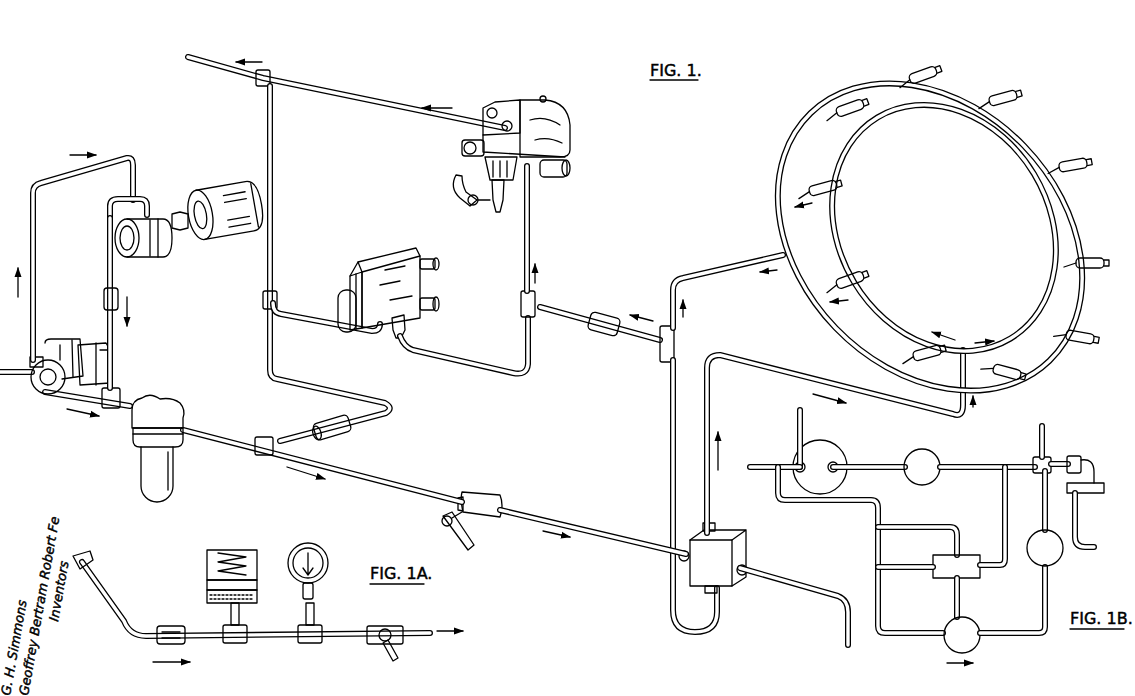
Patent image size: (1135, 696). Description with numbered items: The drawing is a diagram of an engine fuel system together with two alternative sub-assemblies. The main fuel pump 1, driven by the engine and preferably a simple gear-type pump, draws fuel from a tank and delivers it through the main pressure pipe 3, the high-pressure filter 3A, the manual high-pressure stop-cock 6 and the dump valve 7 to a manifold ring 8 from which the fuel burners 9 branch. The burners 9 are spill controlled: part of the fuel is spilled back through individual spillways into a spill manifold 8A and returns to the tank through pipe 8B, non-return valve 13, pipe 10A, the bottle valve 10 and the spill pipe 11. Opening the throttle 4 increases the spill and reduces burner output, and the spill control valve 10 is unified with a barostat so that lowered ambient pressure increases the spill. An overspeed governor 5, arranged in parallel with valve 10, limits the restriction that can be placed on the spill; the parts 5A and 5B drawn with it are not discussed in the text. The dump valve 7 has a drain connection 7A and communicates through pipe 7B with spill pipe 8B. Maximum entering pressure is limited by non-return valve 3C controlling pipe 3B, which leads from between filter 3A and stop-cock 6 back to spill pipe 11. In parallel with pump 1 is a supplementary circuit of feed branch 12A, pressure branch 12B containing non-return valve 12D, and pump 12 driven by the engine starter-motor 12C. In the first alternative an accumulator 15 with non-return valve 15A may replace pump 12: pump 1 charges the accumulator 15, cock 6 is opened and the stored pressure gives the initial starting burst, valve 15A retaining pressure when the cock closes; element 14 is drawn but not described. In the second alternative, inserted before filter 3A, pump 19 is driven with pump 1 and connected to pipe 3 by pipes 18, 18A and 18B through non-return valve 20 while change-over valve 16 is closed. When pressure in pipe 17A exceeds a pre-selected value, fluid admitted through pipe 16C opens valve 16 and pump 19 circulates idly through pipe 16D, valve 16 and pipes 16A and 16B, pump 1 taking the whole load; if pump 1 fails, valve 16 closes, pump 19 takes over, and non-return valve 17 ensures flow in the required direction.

In FIG. 1, the main fuel pump 1 is at (57, 346).
In FIG. 1B, the main fuel pump 1 is at (808, 479).
In FIG. 1, the main pressure pipe 3 is at (68, 398).
In FIG. 1A, the main pressure pipe 3 is at (111, 601).
In FIG. 1B, the main pressure pipe 3 is at (860, 465).
In FIG. 1, the high-pressure filter 3A is at (140, 466).
In FIG. 1B, the high-pressure filter 3A is at (1087, 545).
In FIG. 1, the pipe 3B is at (273, 213).
In FIG. 1, the non-return valve 3C is at (328, 422).
In FIG. 1, the throttle 4 is at (453, 182).
In FIG. 1, the overspeed governor 5 is at (390, 258).
In FIG. 1, the heat exchanger outlet pipe 5A is at (492, 368).
In FIG. 1, the heat exchanger inlet pipe 5B is at (317, 322).
In FIG. 1, the manual high-pressure stop-cock 6 is at (482, 493).
In FIG. 1A, the manual high-pressure stop-cock 6 is at (392, 627).
In FIG. 1, the dump valve 7 is at (712, 551).
In FIG. 1, the drain connection 7A is at (757, 573).
In FIG. 1, the pipe 7B is at (670, 424).
In FIG. 1, the manifold ring 8 is at (894, 309).
In FIG. 1, the spill manifold 8A is at (832, 320).
In FIG. 1, the spill pipe 8B is at (708, 273).
In FIG. 1, the fuel burners 9 is at (1068, 157).
In FIG. 1, the spill control valve 10 is at (562, 131).
In FIG. 1, the pipe 10A is at (530, 226).
In FIG. 1, the spill pipe 11 is at (208, 62).
In FIG. 1, the supplementary pump 12 is at (148, 262).
In FIG. 1, the feed branch 12A is at (50, 173).
In FIG. 1B, the feed branch 12A is at (797, 433).
In FIG. 1, the pressure branch 12B is at (108, 266).
In FIG. 1B, the pressure branch 12B is at (1043, 441).
In FIG. 1, the engine starter-motor 12C is at (227, 193).
In FIG. 1, the non-return valve 12D is at (106, 300).
In FIG. 1, the non-return valve 13 is at (609, 320).
In FIG. 1A, the pressure gauge 14 is at (327, 578).
In FIG. 1A, the accumulator 15 is at (208, 568).
In FIG. 1A, the non-return valve 15A is at (171, 626).
In FIG. 1B, the change-over valve 16 is at (967, 560).
In FIG. 1B, the pipe 16A is at (919, 526).
In FIG. 1B, the pipe 16B is at (915, 568).
In FIG. 1B, the pipe 16C is at (998, 567).
In FIG. 1B, the pipe 16D is at (959, 604).
In FIG. 1B, the non-return valve 17 is at (938, 457).
In FIG. 1B, the pipe 17A is at (973, 464).
In FIG. 1B, the pipe 18 is at (876, 506).
In FIG. 1B, the pipe 18A is at (1008, 636).
In FIG. 1B, the pipe 18B is at (1043, 525).
In FIG. 1B, the pump 19 is at (950, 645).
In FIG. 1B, the non-return valve 20 is at (1055, 566).